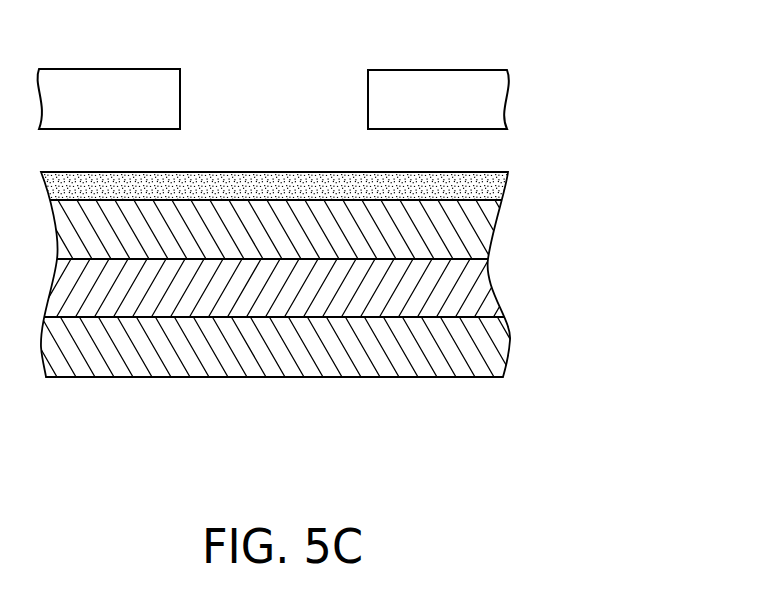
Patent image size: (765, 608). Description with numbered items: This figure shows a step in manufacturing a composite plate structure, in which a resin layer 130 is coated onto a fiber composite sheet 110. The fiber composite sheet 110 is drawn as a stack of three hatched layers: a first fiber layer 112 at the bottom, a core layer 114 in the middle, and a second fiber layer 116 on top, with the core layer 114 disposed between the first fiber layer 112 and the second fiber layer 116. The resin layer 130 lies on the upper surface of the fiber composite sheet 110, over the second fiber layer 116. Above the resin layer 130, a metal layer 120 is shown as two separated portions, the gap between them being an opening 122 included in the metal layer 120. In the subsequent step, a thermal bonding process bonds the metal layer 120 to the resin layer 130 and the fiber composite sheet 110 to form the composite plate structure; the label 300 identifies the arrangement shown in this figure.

The fiber composite sheet 110 is at (328, 270).
The first fiber layer 112 is at (297, 347).
The core layer 114 is at (480, 292).
The second fiber layer 116 is at (480, 233).
The metal layer 120 is at (482, 112).
The opening 122 is at (357, 99).
The resin layer 130 is at (482, 190).
The structure 300 is at (554, 480).